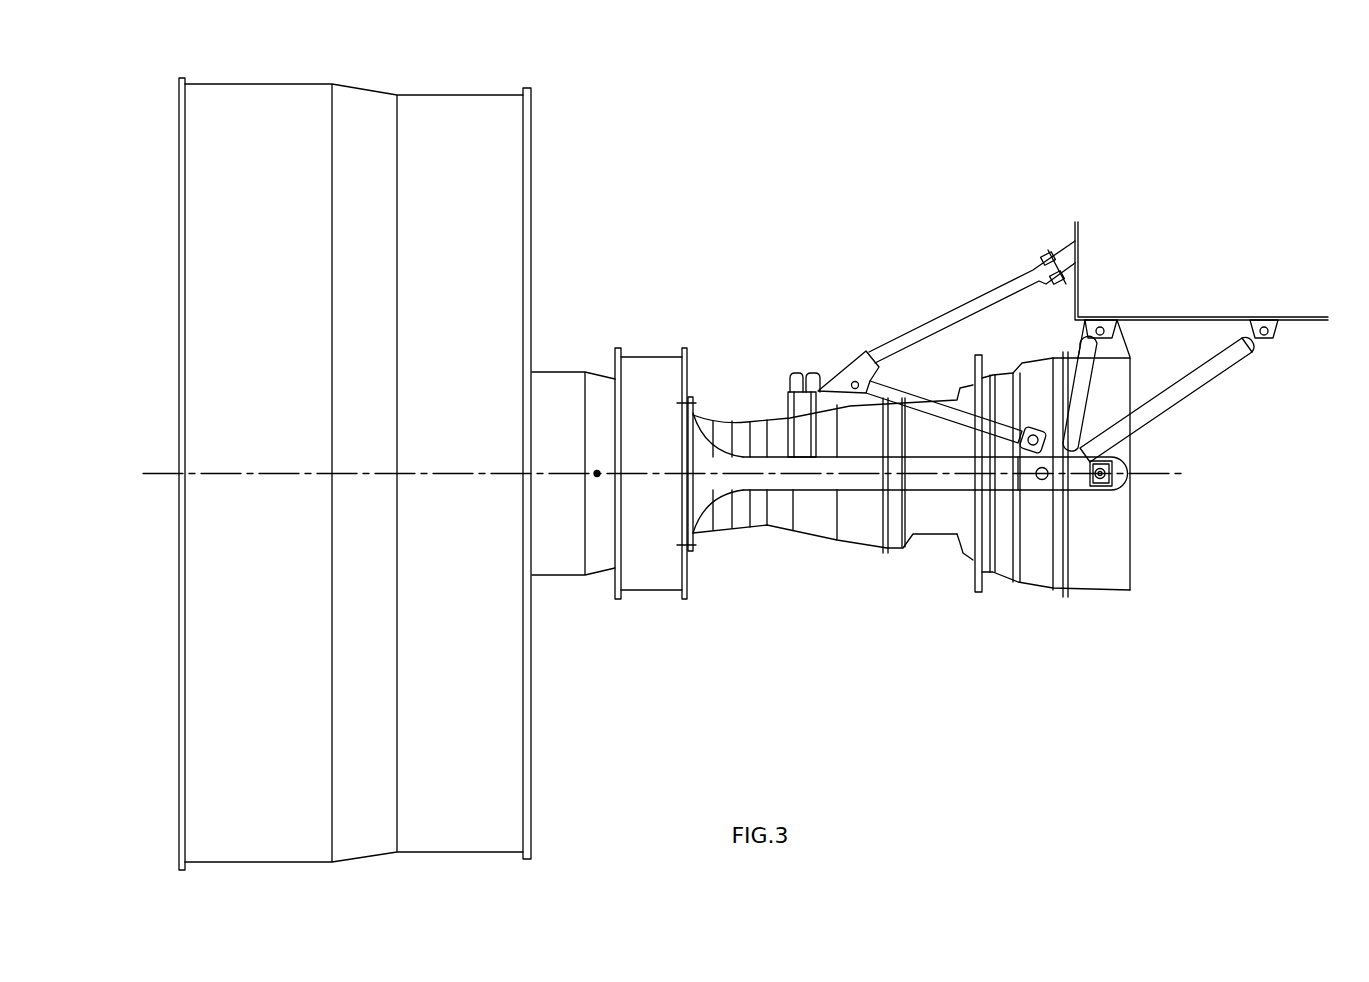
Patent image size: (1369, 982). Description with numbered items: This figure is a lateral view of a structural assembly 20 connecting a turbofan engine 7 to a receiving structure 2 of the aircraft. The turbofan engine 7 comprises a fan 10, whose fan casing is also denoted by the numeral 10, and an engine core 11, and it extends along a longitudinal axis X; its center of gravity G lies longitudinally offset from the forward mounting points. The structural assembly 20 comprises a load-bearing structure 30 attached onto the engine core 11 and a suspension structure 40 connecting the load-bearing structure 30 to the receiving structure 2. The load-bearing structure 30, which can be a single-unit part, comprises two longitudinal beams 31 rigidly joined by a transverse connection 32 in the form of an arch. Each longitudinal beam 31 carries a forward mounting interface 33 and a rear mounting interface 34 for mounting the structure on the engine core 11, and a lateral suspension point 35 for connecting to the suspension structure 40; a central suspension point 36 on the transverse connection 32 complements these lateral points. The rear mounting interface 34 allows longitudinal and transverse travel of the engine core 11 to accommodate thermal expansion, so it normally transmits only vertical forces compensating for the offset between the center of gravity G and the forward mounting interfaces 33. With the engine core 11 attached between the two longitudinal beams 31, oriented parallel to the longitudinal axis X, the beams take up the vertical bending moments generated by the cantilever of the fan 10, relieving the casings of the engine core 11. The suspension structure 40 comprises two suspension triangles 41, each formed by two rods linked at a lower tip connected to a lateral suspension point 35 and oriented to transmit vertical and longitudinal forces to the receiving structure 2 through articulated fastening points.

The fan 10 is at (455, 110).
The turbofan engine 7 is at (643, 299).
The center of gravity G is at (597, 470).
The structural assembly 20 is at (843, 232).
The load-bearing structure 30 is at (780, 450).
The forward mounting interface 33 is at (710, 500).
The longitudinal beam 31 is at (818, 483).
The transverse connection 32 is at (807, 402).
The central suspension point 36 is at (800, 374).
The suspension structure 40 is at (912, 325).
The receiving structure 2 is at (1108, 275).
The suspension triangle 41 is at (1095, 411).
The engine core 11 is at (933, 534).
The lateral suspension point 35 is at (1040, 482).
The rear mounting interface 34 is at (1106, 486).
The longitudinal axis X is at (1199, 474).